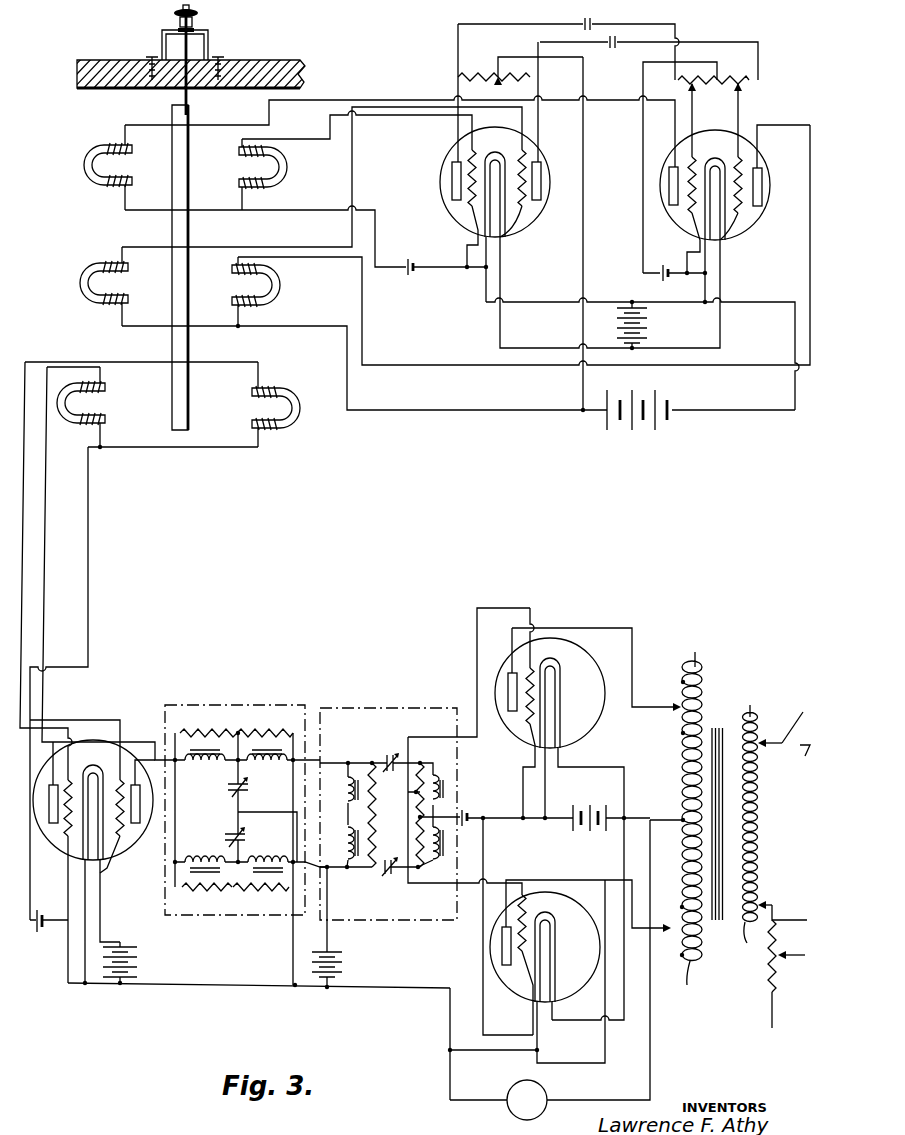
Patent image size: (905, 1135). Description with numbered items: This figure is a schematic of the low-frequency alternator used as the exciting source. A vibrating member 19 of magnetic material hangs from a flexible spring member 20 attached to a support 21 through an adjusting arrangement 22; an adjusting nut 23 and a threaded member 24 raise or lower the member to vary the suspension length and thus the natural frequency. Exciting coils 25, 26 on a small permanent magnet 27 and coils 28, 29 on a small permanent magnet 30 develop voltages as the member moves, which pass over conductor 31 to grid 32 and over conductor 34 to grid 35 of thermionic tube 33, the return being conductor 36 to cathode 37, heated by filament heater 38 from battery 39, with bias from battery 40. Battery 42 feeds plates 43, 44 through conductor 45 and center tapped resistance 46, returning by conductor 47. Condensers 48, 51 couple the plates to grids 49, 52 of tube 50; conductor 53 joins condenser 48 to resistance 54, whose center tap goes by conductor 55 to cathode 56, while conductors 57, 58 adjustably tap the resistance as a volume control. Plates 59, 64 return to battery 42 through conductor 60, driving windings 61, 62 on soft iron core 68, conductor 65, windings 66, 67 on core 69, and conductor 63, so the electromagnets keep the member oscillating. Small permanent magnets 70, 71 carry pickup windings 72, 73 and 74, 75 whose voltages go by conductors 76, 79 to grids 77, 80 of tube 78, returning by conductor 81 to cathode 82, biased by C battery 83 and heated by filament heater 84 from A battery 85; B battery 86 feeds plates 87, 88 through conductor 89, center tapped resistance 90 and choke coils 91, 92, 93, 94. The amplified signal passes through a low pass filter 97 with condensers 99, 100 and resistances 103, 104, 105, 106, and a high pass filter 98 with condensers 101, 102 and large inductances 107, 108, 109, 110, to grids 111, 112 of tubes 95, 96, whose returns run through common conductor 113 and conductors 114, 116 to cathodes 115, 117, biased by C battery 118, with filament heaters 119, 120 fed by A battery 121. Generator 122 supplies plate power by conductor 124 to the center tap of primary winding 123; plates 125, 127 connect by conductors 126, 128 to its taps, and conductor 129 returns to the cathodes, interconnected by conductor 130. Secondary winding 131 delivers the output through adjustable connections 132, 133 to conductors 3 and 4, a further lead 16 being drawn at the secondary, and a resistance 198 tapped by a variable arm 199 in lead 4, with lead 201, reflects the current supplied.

The conductor 3 is at (805, 756).
The output lead 4 is at (774, 1010).
The lead 16 is at (803, 712).
The vibrating member 19 is at (190, 226).
The flexible spring member 20 is at (184, 96).
The support 21 is at (268, 63).
The adjusting arrangement 22 is at (210, 47).
The adjusting nut 23 is at (194, 18).
The threaded member 24 is at (175, 15).
The exciting coil 25 is at (113, 145).
The exciting coil 26 is at (113, 187).
The small permanent magnet 27 is at (86, 172).
The exciting coil 28 is at (268, 154).
The exciting coil 29 is at (268, 186).
The small permanent magnet 30 is at (288, 170).
The conductor 31 is at (322, 98).
The grid 32 is at (528, 214).
The thermionic tube 33 is at (542, 148).
The conductor 34 is at (393, 118).
The grid 35 is at (468, 207).
The conductor 36 is at (304, 212).
The cathode 37 is at (474, 232).
The filament heater 38 is at (503, 237).
The battery 39 is at (650, 325).
The battery 40 is at (409, 277).
The battery 42 is at (645, 427).
The plate 43 is at (452, 188).
The plate 44 is at (542, 182).
The conductor 45 is at (586, 228).
The center tapped resistance 46 is at (478, 74).
The conductor 47 is at (790, 306).
The condenser 48 is at (594, 27).
The grid 49 is at (700, 160).
The thermionic tube 50 is at (760, 233).
The condenser 51 is at (617, 46).
The grid 52 is at (733, 241).
The conductor 53 is at (673, 30).
The resistance 54 is at (748, 78).
The conductor 55 is at (643, 80).
The cathode 56 is at (686, 257).
The conductor 57 is at (694, 118).
The conductor 58 is at (748, 116).
The plate 59 is at (672, 208).
The conductor 60 is at (354, 178).
The driving winding 61 is at (119, 262).
The driving winding 62 is at (118, 306).
The conductor 63 is at (313, 330).
The plate 64 is at (763, 188).
The conductor 65 is at (470, 352).
The driving winding 66 is at (240, 286).
The driving winding 67 is at (266, 306).
The soft iron electromagnet core 68 is at (80, 290).
The soft iron electromagnet core 69 is at (282, 285).
The small permanent magnet 70 is at (70, 416).
The small permanent magnet 71 is at (300, 418).
The pickup winding 72 is at (105, 402).
The pickup winding 73 is at (107, 416).
The pickup winding 74 is at (270, 394).
The pickup winding 75 is at (268, 430).
The conductor 76 is at (46, 588).
The grid 77 is at (124, 852).
The thermionic tube 78 is at (68, 880).
The conductor 79 is at (30, 628).
The grid 80 is at (66, 839).
The conductor 81 is at (90, 588).
The cathode 82 is at (98, 780).
The C battery 83 is at (37, 934).
The filament heater 84 is at (103, 871).
The A battery 85 is at (140, 963).
The B battery 86 is at (343, 966).
The plate 87 is at (47, 822).
The plate 88 is at (137, 826).
The conductor 89 is at (328, 900).
The center tapped resistance 90 is at (377, 820).
The choke coil 91 is at (270, 765).
The choke coil 92 is at (208, 765).
The choke coil 93 is at (272, 857).
The choke coil 94 is at (203, 857).
The thermionic tube 95 is at (598, 741).
The thermionic tube 96 is at (566, 993).
The low pass filter 97 is at (243, 917).
The high pass filter 98 is at (395, 920).
The condenser 99 is at (250, 789).
The condenser 100 is at (247, 836).
The condenser 101 is at (386, 758).
The condenser 102 is at (390, 877).
The resistance 103 is at (280, 724).
The resistance 104 is at (213, 730).
The resistance 105 is at (265, 890).
The resistance 106 is at (210, 890).
The choke coil reactance 107 is at (345, 786).
The choke coil reactance 108 is at (344, 830).
The choke coil reactance 109 is at (436, 771).
The choke coil reactance 110 is at (436, 866).
The grid 111 is at (534, 668).
The grid 112 is at (522, 986).
The common conductor 113 is at (522, 821).
The conductor 114 is at (523, 793).
The cathode 115 is at (528, 731).
The conductor 116 is at (485, 874).
The cathode 117 is at (531, 1018).
The C battery 118 is at (468, 808).
The filament heater 119 is at (562, 706).
The filament heater 120 is at (555, 950).
The A battery 121 is at (592, 807).
The generator 122 is at (510, 1108).
The primary winding 123 is at (705, 942).
The conductor 124 is at (651, 1045).
The plate 125 is at (510, 670).
The conductor 126 is at (604, 634).
The plate 127 is at (500, 951).
The conductor 128 is at (600, 881).
The conductor 129 is at (472, 1052).
The conductor 130 is at (606, 1048).
The secondary winding 131 is at (760, 853).
The adjustable connection 132 is at (782, 742).
The adjustable connection 133 is at (770, 902).
The resistance 198 is at (768, 965).
The variable arm 199 is at (792, 954).
The lead 201 is at (783, 920).